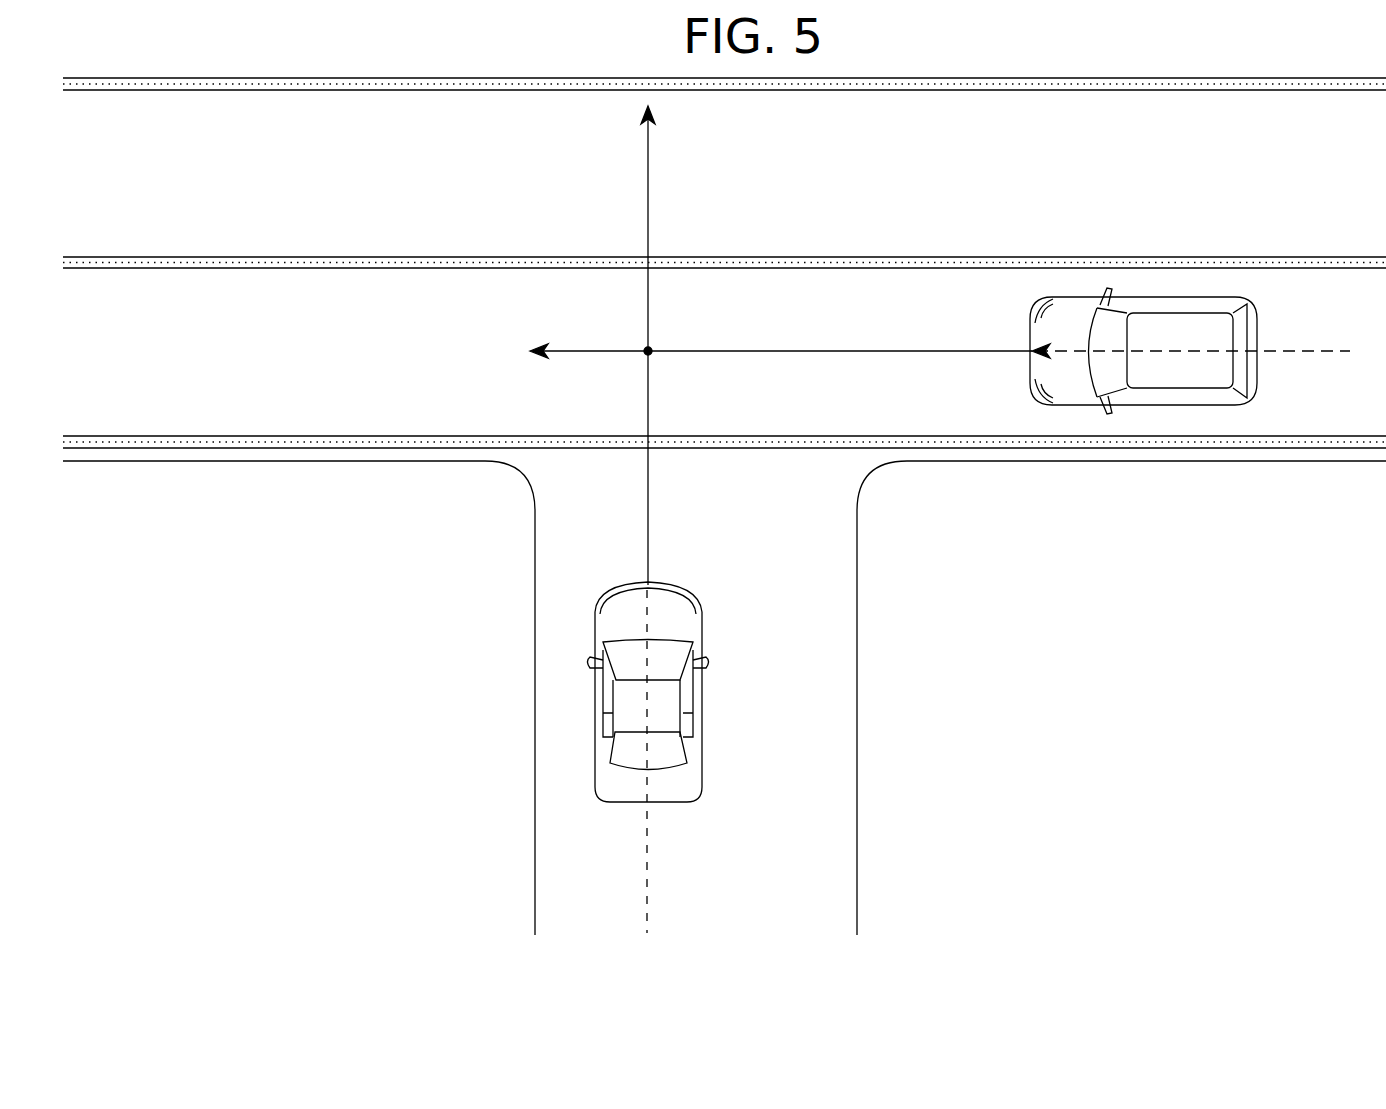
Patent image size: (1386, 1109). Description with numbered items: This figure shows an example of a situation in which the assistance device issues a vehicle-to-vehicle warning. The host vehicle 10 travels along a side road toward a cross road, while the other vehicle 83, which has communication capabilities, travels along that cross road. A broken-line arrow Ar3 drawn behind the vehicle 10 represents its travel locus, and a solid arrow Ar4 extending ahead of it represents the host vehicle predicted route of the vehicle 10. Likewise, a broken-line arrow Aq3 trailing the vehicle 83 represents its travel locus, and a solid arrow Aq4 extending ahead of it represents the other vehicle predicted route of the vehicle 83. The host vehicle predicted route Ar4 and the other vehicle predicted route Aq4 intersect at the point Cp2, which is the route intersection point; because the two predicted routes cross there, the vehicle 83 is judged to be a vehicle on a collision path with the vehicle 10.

The vehicle 10 is at (618, 803).
The vehicle 83 is at (1040, 398).
The point Cp2 is at (651, 354).
The arrow Aq4 is at (753, 352).
The broken-line arrow Aq3 is at (1270, 351).
The arrow Ar4 is at (649, 488).
The broken-line arrow Ar3 is at (647, 875).